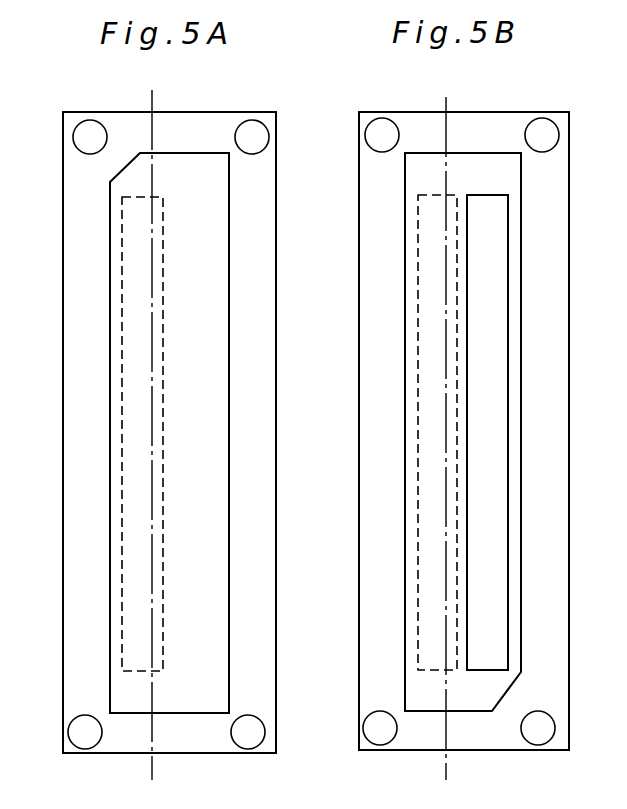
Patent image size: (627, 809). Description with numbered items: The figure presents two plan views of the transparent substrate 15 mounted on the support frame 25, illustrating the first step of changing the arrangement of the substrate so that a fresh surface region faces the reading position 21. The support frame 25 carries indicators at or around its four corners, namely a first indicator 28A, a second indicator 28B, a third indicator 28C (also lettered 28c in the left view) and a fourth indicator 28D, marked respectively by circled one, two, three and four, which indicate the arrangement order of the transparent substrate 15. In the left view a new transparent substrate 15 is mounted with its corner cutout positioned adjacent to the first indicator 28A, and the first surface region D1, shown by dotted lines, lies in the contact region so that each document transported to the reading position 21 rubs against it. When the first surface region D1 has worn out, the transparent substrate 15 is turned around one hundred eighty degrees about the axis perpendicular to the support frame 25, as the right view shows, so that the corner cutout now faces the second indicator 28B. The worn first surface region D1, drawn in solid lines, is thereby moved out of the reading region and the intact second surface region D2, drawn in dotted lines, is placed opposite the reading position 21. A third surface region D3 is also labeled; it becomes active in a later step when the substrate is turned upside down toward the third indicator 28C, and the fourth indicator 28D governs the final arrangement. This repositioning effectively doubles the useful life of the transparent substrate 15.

In FIG. 5A, the transparent substrate 15 is at (229, 466).
In FIG. 5B, the transparent substrate 15 is at (521, 457).
In FIG. 5A, the reading position 21 is at (143, 449).
In FIG. 5B, the reading position 21 is at (440, 453).
In FIG. 5A, the support frame 25 is at (258, 540).
In FIG. 5B, the support frame 25 is at (556, 552).
In FIG. 5A, the first indicator 28A is at (92, 120).
In FIG. 5B, the first indicator 28A is at (383, 118).
In FIG. 5A, the second indicator 28B is at (243, 749).
In FIG. 5B, the second indicator 28B is at (534, 745).
In FIG. 5B, the third indicator 28C is at (372, 745).
In FIG. 5A, the third indicator 28c is at (88, 749).
In FIG. 5A, the fourth indicator 28D is at (250, 120).
In FIG. 5B, the fourth indicator 28D is at (540, 118).
In FIG. 5A, the first surface region D1 is at (120, 341).
In FIG. 5B, the first surface region D1 is at (508, 345).
In FIG. 5B, the second surface region D2 is at (418, 347).
In FIG. 5B, the third surface region D3 is at (610, 296).